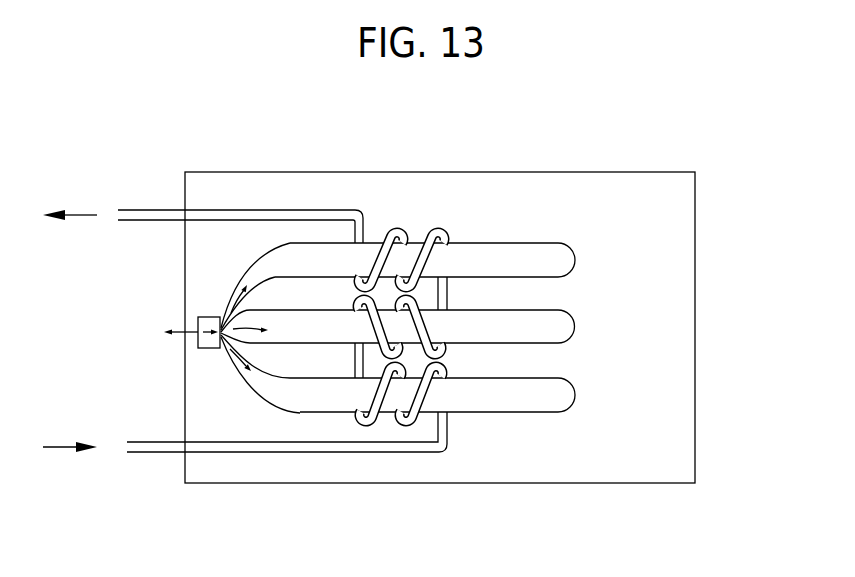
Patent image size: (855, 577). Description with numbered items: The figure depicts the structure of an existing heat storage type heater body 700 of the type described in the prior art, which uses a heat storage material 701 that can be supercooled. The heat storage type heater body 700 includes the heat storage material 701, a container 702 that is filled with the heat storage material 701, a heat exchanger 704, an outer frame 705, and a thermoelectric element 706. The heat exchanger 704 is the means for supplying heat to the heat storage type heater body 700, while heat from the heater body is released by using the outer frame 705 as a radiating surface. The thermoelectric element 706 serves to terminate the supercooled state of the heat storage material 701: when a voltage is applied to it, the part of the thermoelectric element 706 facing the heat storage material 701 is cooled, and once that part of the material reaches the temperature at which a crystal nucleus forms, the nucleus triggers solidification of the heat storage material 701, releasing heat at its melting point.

The heat storage type heater body 700 is at (503, 148).
The heat storage material 701 is at (536, 392).
The container 702 is at (577, 393).
The heat exchanger 704 is at (155, 452).
The outer frame 705 is at (695, 270).
The thermoelectric element 706 is at (208, 316).